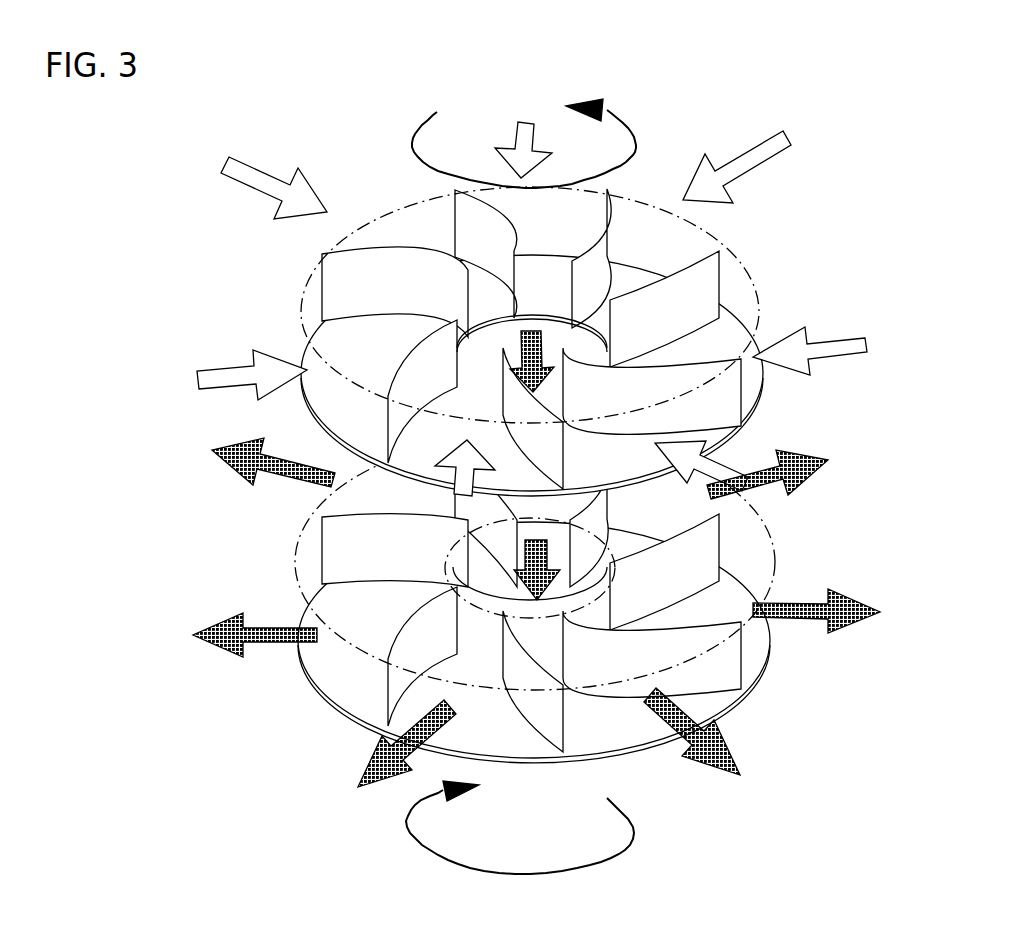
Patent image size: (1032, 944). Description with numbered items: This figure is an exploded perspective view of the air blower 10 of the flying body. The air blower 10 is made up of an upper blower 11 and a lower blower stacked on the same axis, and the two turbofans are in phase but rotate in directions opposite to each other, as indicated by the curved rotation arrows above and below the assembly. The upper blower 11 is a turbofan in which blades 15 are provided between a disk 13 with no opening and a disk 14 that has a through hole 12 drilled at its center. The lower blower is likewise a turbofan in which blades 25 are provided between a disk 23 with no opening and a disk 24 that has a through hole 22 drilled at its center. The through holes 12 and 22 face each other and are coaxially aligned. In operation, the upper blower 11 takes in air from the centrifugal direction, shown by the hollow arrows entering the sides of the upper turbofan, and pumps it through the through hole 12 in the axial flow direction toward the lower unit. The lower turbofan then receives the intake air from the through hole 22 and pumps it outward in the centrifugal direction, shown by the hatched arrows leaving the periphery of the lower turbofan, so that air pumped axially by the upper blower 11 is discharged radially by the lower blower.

The air blower 10 is at (900, 485).
The upper blower 11 is at (514, 297).
The through hole 12 is at (488, 352).
The disk 13 is at (722, 245).
The disk 14 is at (330, 406).
The blades 15 is at (375, 263).
The through hole 22 is at (600, 590).
The disk 23 is at (360, 642).
The disk 24 is at (338, 550).
The blades 25 is at (516, 656).